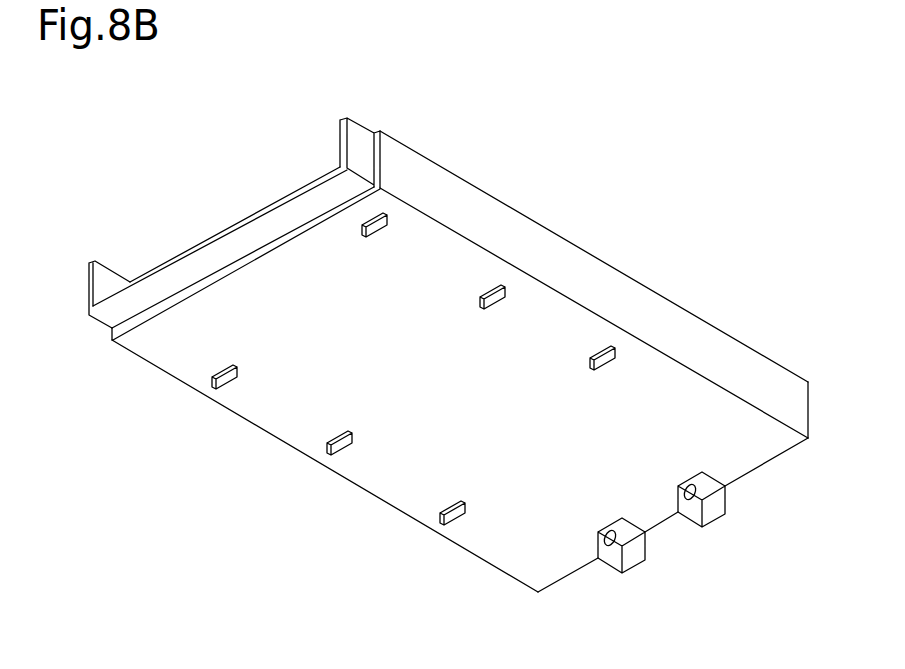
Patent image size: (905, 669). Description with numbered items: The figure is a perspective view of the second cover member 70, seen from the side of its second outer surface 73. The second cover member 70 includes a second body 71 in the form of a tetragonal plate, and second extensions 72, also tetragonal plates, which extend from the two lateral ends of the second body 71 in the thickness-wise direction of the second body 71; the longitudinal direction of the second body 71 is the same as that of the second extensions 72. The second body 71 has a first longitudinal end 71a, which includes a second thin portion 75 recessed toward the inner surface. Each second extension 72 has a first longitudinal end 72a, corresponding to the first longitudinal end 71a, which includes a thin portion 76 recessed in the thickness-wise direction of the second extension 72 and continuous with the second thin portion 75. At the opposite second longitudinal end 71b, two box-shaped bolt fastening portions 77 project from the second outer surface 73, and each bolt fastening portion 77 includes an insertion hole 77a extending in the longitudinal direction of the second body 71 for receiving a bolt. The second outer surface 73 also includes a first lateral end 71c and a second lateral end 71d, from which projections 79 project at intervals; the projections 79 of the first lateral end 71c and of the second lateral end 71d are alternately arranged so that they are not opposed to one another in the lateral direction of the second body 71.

The second cover member 70 is at (669, 146).
The second body 71 is at (740, 478).
The first longitudinal end 71a is at (145, 274).
The second longitudinal end 71b is at (575, 573).
The first lateral end 71c is at (387, 507).
The second lateral end 71d is at (588, 312).
The second extension 72 is at (658, 303).
The first longitudinal end 72a is at (88, 283).
The second outer surface 73 is at (712, 393).
The second thin portion 75 is at (318, 195).
The thin portion 76 is at (360, 138).
The bolt fastening portion 77 is at (706, 517).
The insertion hole 77a is at (683, 484).
The projection 79 is at (602, 348).